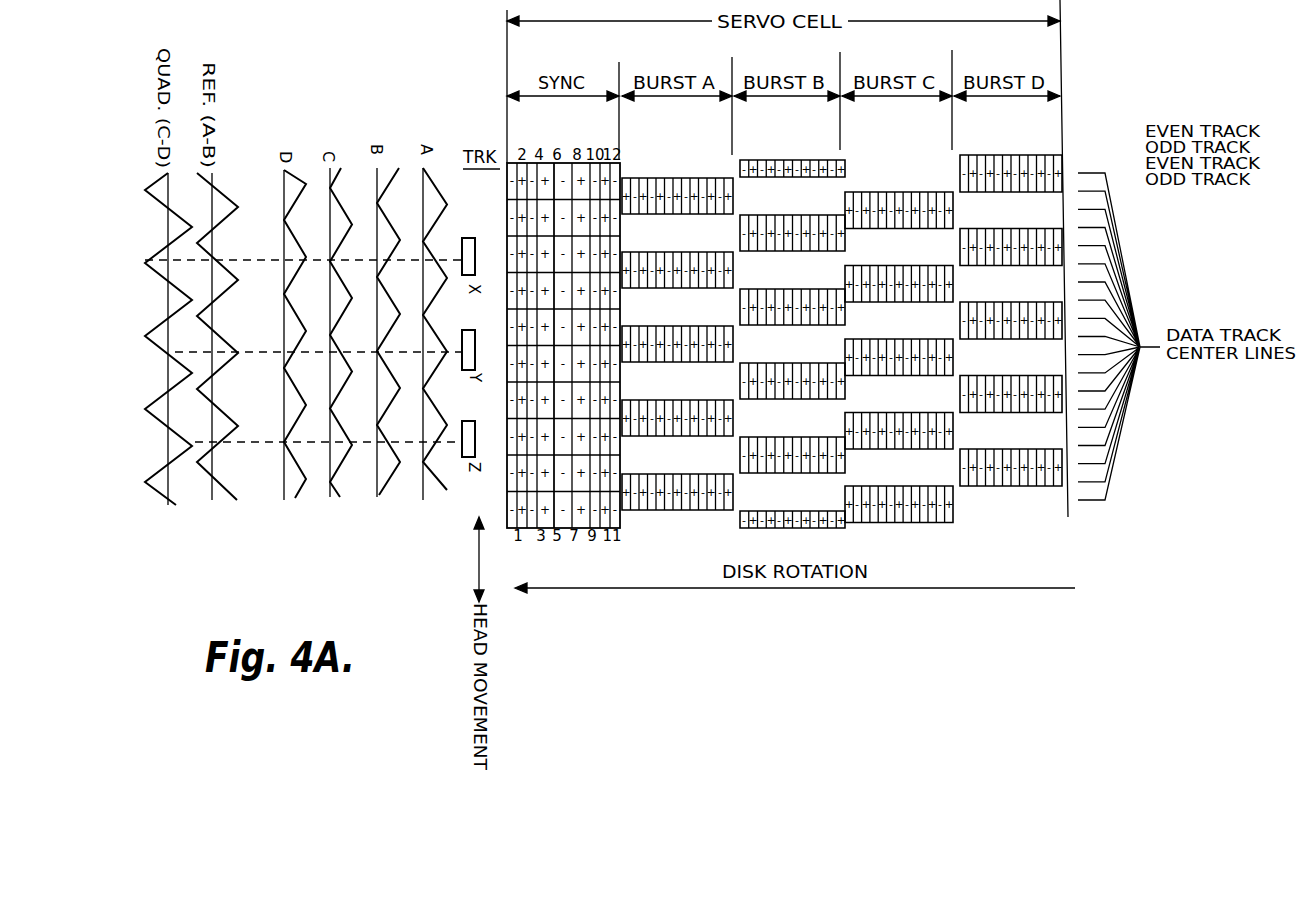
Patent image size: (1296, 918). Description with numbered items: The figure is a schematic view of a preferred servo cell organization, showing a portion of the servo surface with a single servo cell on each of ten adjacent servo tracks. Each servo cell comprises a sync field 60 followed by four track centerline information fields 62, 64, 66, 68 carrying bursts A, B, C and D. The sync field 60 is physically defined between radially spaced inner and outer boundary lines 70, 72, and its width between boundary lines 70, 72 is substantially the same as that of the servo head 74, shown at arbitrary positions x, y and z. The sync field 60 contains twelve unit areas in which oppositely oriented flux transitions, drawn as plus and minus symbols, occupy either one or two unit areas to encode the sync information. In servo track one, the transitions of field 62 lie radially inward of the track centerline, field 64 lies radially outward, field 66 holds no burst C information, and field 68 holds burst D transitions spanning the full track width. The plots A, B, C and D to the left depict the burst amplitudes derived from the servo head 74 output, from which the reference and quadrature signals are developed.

The sync field 60 is at (548, 127).
The track centerline information field (BURST A) 62 is at (655, 127).
The track centerline information field (BURST B) 64 is at (773, 127).
The track centerline information field (BURST C) 66 is at (881, 127).
The track centerline information field (BURST D) 68 is at (989, 127).
The inner boundary line 70 is at (506, 200).
The outer boundary line 72 is at (560, 163).
The servo head 74 is at (462, 460).